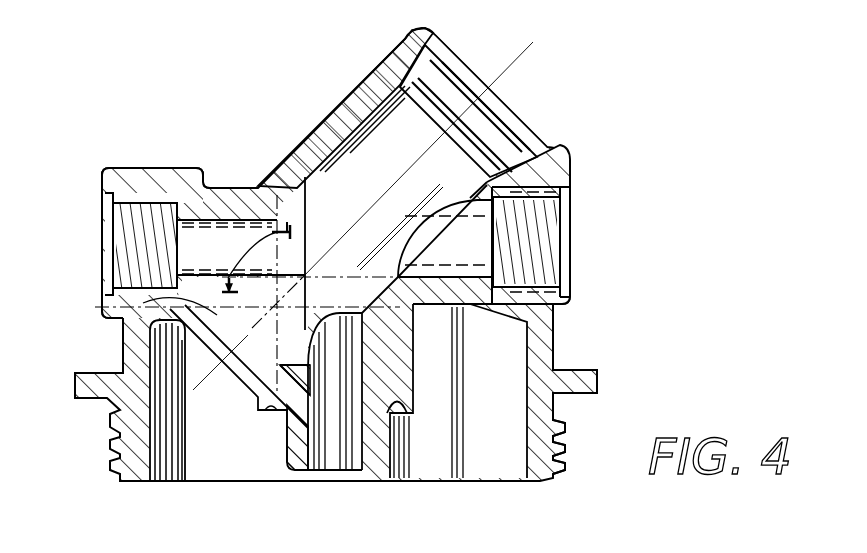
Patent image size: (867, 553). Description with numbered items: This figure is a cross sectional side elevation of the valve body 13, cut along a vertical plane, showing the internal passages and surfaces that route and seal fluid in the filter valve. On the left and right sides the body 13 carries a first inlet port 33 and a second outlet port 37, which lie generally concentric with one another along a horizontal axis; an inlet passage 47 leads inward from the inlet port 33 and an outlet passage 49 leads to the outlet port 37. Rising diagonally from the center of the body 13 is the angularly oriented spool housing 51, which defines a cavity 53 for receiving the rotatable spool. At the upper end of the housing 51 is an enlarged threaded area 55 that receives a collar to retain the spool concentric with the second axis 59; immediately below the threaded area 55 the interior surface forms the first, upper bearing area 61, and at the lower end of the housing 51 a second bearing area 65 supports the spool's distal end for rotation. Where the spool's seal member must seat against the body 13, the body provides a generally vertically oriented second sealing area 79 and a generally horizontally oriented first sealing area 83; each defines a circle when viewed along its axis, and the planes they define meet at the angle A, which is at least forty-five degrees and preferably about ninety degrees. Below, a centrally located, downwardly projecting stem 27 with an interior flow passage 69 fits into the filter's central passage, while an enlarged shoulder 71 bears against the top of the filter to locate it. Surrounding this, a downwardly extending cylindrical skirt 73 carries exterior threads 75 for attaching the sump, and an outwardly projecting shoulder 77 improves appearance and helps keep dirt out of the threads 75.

The valve body 13 is at (553, 344).
The stem 27 is at (297, 449).
The first inlet port 33 is at (102, 220).
The second outlet port 37 is at (568, 262).
The inlet passage 47 is at (212, 238).
The outlet passage 49 is at (560, 304).
The spool housing 51 is at (322, 118).
The cavity 53 is at (393, 132).
The threaded area 55 is at (527, 165).
The second axis 59 is at (533, 42).
The first upper bearing area 61 is at (492, 192).
The second bearing area 65 is at (130, 305).
The interior flow passage 69 is at (347, 459).
The enlarged shoulder 71 is at (413, 416).
The skirt 73 is at (545, 481).
The exterior threads 75 is at (560, 424).
The outwardly projecting shoulder 77 is at (75, 392).
The second sealing area 79 is at (290, 205).
The first sealing area 83 is at (157, 332).